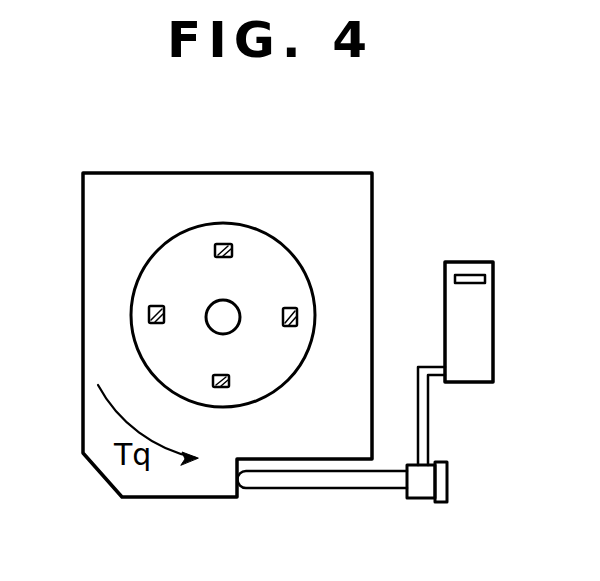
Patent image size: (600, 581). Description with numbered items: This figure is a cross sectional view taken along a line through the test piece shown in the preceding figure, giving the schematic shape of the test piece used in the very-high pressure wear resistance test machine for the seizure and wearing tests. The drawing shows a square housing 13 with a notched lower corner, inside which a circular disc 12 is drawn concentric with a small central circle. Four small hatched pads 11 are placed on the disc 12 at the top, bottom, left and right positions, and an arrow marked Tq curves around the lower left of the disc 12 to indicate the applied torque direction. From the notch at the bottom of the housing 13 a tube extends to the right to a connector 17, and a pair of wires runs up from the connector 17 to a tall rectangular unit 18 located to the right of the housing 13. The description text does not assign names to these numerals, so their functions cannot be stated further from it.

The hatched pads / weights on disc 11 is at (233, 252).
The rotating disc 12 is at (248, 223).
The housing / body 13 is at (193, 172).
The connector 17 is at (423, 500).
The control unit 18 is at (468, 383).